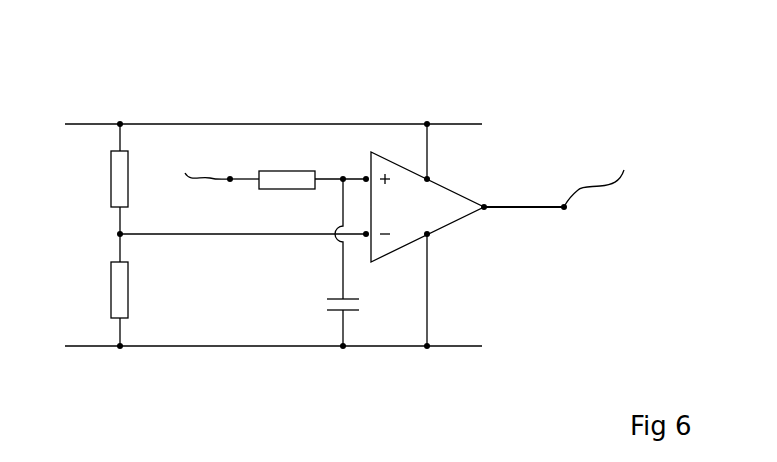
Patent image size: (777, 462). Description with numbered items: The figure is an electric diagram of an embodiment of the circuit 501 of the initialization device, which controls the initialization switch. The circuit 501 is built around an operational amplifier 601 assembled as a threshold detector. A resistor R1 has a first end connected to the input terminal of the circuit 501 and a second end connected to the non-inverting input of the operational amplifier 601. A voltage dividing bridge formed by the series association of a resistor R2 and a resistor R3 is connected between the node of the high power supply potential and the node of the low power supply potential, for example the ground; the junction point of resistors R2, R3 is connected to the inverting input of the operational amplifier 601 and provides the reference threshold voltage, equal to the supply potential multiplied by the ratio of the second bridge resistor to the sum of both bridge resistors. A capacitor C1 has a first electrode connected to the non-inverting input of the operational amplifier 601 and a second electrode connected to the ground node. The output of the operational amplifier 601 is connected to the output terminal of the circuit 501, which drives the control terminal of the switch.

The circuit 501 is at (341, 212).
The operational amplifier 601 is at (450, 190).
The resistor R1 is at (287, 169).
The resistor R2 is at (102, 179).
The resistor R3 is at (102, 290).
The capacitor C1 is at (358, 305).